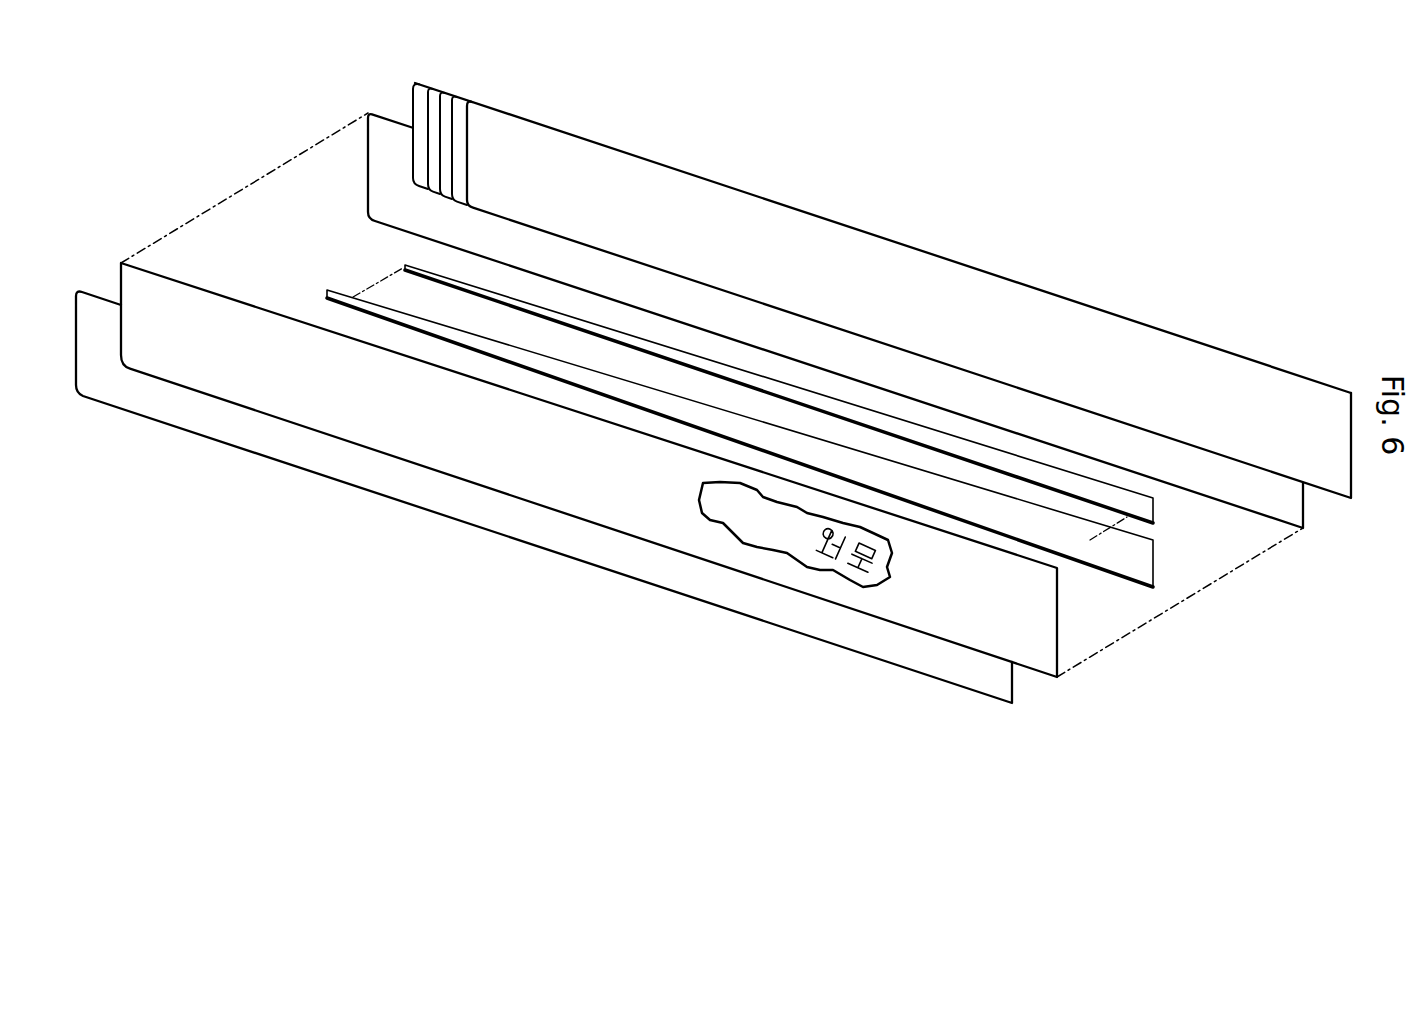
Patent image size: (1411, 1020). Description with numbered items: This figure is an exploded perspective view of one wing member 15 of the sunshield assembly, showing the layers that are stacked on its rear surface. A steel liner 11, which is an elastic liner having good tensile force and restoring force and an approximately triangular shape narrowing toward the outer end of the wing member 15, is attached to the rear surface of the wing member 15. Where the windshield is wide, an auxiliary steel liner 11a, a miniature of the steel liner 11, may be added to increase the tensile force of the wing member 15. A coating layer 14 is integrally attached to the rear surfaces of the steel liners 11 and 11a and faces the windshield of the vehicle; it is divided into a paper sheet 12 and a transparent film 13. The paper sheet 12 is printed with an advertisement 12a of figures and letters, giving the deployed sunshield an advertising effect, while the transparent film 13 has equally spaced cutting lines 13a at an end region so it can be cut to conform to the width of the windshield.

The steel liner 11 is at (740, 427).
The auxiliary steel liner 11a is at (560, 318).
The paper sheet 12 is at (712, 416).
The advertisement 12a is at (800, 557).
The transparent film 13 is at (713, 385).
The cutting lines 13a is at (455, 127).
The coating layer 14 is at (713, 401).
The wing member 15 is at (713, 401).